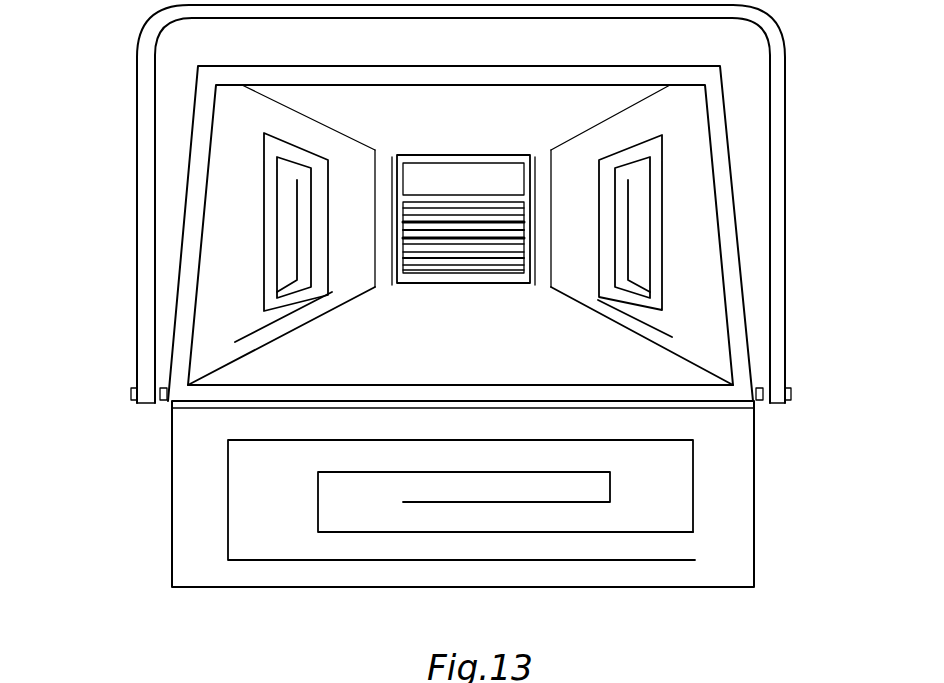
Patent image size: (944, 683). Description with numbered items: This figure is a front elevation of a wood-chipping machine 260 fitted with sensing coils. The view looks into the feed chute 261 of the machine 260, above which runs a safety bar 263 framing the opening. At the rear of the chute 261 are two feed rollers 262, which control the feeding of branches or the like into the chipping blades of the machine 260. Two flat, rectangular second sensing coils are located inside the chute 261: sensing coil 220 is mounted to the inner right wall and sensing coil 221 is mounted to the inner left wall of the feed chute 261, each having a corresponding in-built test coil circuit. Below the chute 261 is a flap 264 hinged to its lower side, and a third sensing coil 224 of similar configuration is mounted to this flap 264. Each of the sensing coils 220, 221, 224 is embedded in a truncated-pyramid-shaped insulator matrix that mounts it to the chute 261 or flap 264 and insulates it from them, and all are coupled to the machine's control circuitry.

The wood-chipping machine 260 is at (813, 437).
The feed chute 261 is at (292, 352).
The feed rollers 262 is at (403, 250).
The safety bar 263 is at (137, 83).
The flap 264 is at (640, 587).
The sensing coil 220 is at (652, 222).
The sensing coil 221 is at (258, 258).
The third sensing coil 224 is at (723, 493).